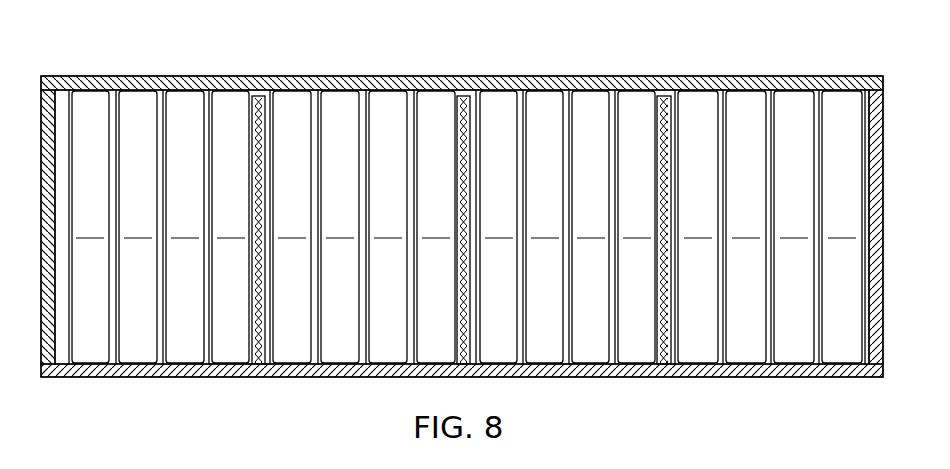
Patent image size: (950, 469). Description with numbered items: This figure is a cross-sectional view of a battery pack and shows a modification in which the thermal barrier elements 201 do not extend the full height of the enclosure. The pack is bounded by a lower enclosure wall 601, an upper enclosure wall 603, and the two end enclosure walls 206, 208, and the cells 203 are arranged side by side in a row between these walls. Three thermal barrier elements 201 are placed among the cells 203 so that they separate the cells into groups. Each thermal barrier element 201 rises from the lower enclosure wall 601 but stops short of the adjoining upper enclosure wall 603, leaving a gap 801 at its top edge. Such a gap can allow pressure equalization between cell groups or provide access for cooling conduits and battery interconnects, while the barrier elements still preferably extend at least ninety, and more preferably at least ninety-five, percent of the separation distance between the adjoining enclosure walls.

The thermal barrier element 201 is at (266, 114).
The cell 203 is at (467, 227).
The enclosure wall 206 is at (885, 106).
The enclosure wall 208 is at (43, 118).
The lower enclosure wall 601 is at (589, 371).
The upper enclosure wall 603 is at (548, 76).
The gap 801 is at (479, 92).